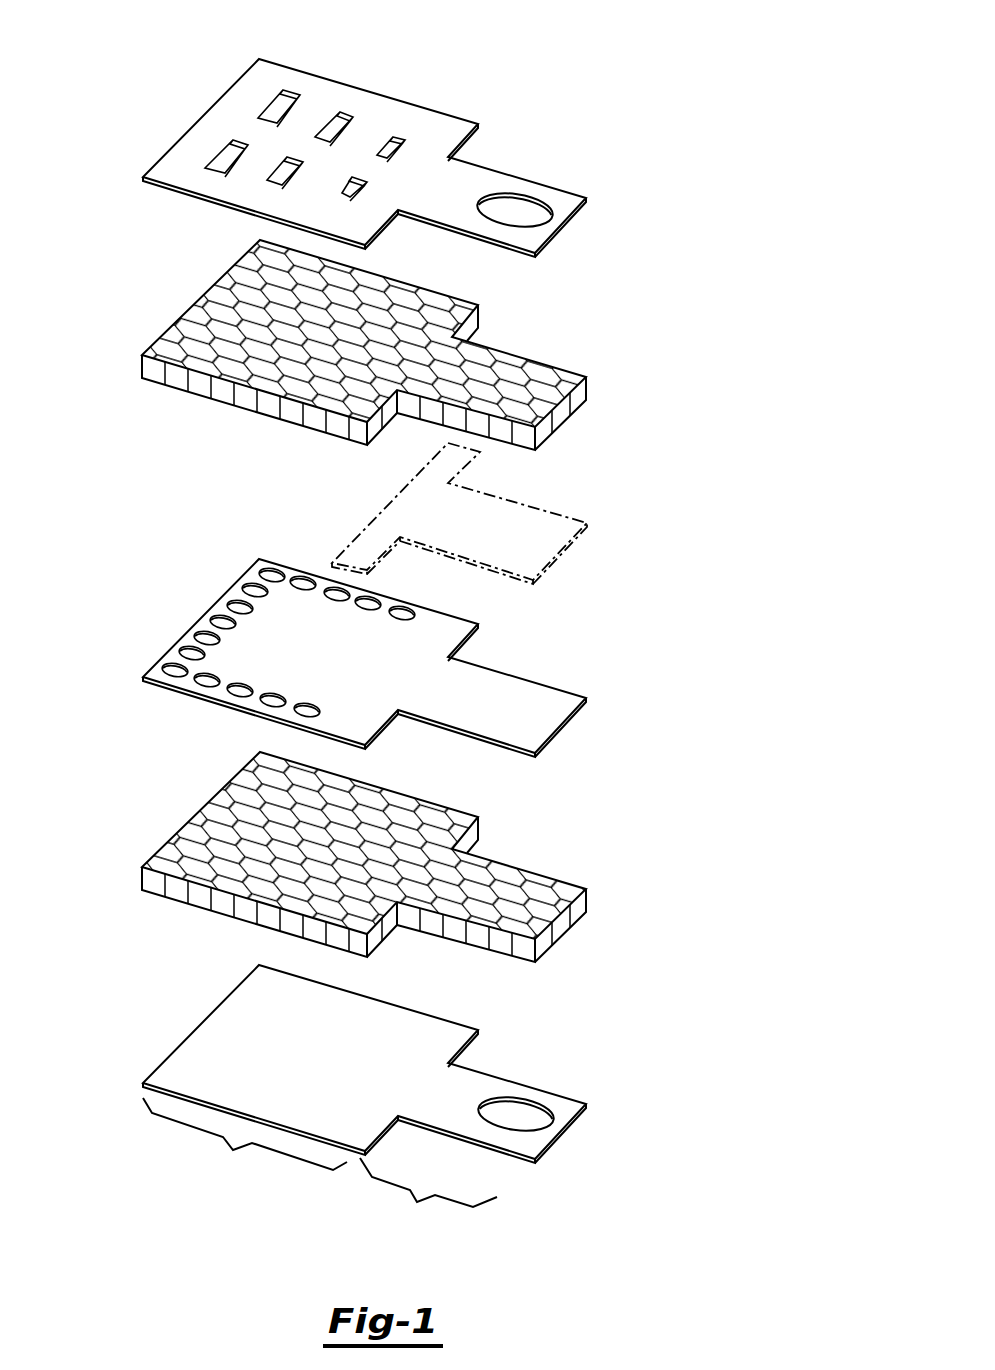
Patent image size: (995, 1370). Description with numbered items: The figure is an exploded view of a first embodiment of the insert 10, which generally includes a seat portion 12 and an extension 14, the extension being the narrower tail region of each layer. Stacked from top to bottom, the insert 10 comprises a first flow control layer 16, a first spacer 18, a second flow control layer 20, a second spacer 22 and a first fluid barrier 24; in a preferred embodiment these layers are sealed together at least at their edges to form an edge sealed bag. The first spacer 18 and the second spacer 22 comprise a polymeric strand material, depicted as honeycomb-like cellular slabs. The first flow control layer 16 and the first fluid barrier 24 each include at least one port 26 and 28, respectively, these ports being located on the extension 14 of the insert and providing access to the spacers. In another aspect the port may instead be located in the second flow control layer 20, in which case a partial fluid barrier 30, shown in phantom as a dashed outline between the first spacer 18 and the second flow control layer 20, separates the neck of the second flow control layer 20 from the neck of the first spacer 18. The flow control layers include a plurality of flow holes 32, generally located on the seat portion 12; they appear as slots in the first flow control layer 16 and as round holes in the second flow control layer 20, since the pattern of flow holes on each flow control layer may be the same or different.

The insert 10 is at (48, 26).
The seat portion 12 is at (245, 1140).
The extension 14 is at (428, 1195).
The first flow control layer 16 is at (367, 155).
The first spacer 18 is at (538, 380).
The second flow control layer 20 is at (557, 702).
The second spacer 22 is at (562, 893).
The first fluid barrier 24 is at (410, 1064).
The port 26 is at (520, 212).
The port 28 is at (525, 1112).
The partial fluid barrier 30 is at (560, 527).
The flow holes 32 is at (217, 160).